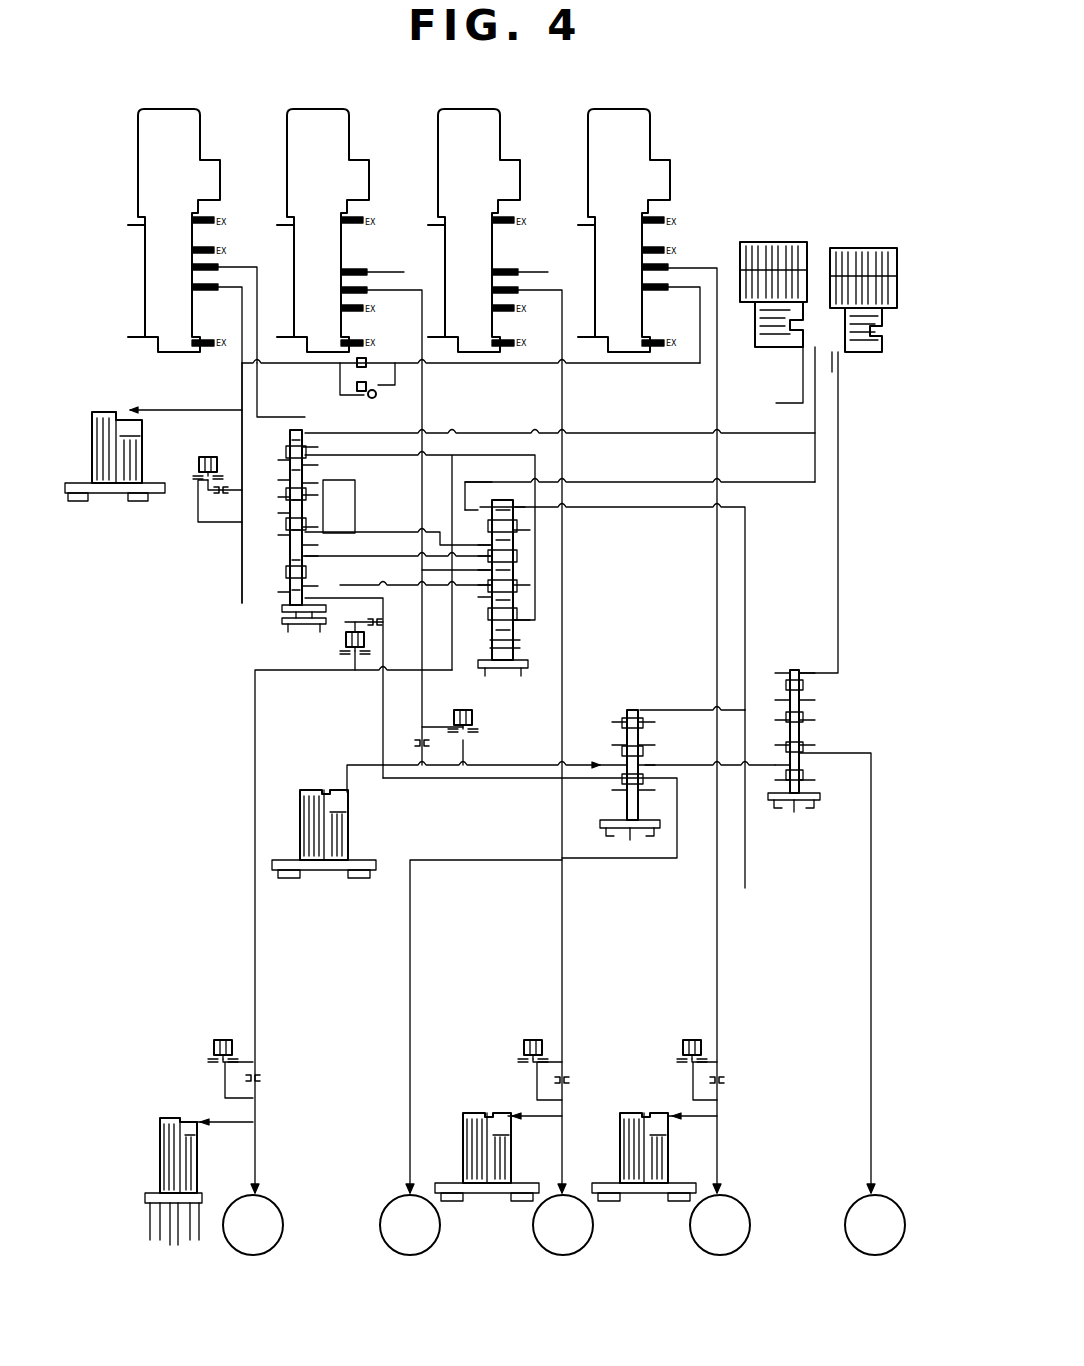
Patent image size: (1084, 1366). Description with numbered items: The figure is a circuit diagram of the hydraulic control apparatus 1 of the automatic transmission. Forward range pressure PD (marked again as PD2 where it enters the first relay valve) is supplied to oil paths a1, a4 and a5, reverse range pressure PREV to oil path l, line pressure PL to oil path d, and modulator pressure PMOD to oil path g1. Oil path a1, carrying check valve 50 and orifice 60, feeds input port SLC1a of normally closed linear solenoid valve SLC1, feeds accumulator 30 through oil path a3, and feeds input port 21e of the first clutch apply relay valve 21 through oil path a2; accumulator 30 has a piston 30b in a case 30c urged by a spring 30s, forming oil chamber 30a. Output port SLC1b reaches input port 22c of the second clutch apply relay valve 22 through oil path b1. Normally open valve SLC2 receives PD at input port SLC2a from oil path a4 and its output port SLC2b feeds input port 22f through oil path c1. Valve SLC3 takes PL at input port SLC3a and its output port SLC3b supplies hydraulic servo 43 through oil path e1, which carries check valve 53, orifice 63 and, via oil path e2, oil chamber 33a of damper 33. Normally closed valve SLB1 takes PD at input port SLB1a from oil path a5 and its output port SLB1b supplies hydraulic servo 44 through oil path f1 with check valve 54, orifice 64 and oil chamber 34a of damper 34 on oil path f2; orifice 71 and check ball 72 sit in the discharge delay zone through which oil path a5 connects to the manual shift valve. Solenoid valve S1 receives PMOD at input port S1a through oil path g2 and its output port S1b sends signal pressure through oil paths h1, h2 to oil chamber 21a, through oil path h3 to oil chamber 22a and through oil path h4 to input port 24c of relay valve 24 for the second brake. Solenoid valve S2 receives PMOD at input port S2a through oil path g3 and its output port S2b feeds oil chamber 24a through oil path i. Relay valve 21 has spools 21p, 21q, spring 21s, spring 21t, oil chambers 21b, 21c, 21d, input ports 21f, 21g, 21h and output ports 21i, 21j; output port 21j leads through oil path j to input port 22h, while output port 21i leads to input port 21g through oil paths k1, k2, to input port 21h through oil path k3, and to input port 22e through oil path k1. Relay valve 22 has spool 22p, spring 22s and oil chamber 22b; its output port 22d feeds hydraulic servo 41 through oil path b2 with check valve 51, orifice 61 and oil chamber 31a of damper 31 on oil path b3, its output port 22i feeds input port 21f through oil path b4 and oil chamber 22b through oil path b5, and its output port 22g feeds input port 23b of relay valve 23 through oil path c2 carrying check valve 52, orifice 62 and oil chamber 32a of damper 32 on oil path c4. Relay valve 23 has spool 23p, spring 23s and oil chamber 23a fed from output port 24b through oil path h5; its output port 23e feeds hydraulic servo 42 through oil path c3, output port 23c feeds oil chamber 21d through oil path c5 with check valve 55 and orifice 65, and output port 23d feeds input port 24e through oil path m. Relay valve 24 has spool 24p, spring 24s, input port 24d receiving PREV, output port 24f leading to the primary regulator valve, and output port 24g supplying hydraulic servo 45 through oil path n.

The hydraulic control apparatus 1 is at (749, 128).
The first clutch apply relay valve 21 is at (288, 432).
The oil chamber 21a is at (348, 420).
The oil chamber 21b is at (318, 467).
The oil chamber 21c is at (283, 497).
The oil chamber 21d is at (320, 587).
The input port 21e is at (283, 535).
The input port 21f is at (318, 450).
The input port 21g is at (320, 484).
The input port 21h is at (343, 495).
The output port 21i is at (318, 546).
The output port 21j is at (320, 557).
The spool 21p is at (283, 513).
The spool 21q is at (283, 460).
The spring 21s is at (283, 592).
The spring 21t is at (283, 480).
The second clutch apply relay valve 22 is at (526, 662).
The oil chamber 22a is at (487, 492).
The oil chamber 22b is at (536, 620).
The input port 22c is at (465, 546).
The output port 22d is at (465, 558).
The input port 22e is at (465, 572).
The input port 22f is at (464, 586).
The output port 22g is at (465, 598).
The input port 22h is at (490, 606).
The output port 22i is at (530, 532).
The spool 22p is at (520, 586).
The spring 22s is at (492, 640).
The C-2 relay valve 23 is at (631, 708).
The oil chamber 23a is at (640, 712).
The input port 23b is at (606, 765).
The output port 23c is at (618, 790).
The output port 23d is at (652, 746).
The output port 23e is at (648, 780).
The spool 23p is at (652, 722).
The spring 23s is at (622, 818).
The B-2 relay valve 24 is at (792, 668).
The oil chamber 24a is at (802, 670).
The output port 24b is at (788, 674).
The input port 24c is at (740, 770).
The input port 24d is at (788, 748).
The input port 24e is at (788, 778).
The output port 24f is at (812, 722).
The output port 24g is at (812, 747).
The spool 24p is at (812, 702).
The spring 24s is at (812, 784).
The accumulator 30 is at (96, 410).
The oil chamber 30a is at (116, 410).
The piston 30b is at (136, 440).
The case 30c is at (94, 432).
The spring 30s is at (130, 462).
The C-1 damper 31 is at (166, 1115).
The oil chamber 31a is at (160, 1132).
The C2-B2 damper 32 is at (308, 788).
The oil chamber 32a is at (334, 790).
The C-3 damper 33 is at (467, 1111).
The oil chamber 33a is at (494, 1113).
The B-1 damper 34 is at (623, 1111).
The oil chamber 34a is at (650, 1113).
The hydraulic servo of clutch C-1 41 is at (268, 1194).
The hydraulic servo of clutch C-2 42 is at (397, 1194).
The hydraulic servo of clutch C-3 43 is at (574, 1194).
The hydraulic servo of brake B-1 44 is at (730, 1194).
The hydraulic servo of brake B-2 45 is at (859, 1194).
The check valve 50 is at (209, 457).
The check valve 51 is at (223, 1040).
The check valve 52 is at (478, 725).
The check valve 53 is at (531, 1040).
The check valve 54 is at (691, 1040).
The check valve 55 is at (354, 658).
The orifice 60 is at (228, 493).
The orifice 61 is at (265, 1078).
The orifice 62 is at (419, 738).
The orifice 63 is at (574, 1078).
The orifice 64 is at (731, 1079).
The orifice 65 is at (386, 622).
The orifice 71 is at (377, 362).
The check ball 72 is at (348, 394).
The linear solenoid valve SLC1 is at (177, 211).
The linear solenoid valve SLC2 is at (326, 211).
The linear solenoid valve SLC3 is at (477, 211).
The linear solenoid valve SLB1 is at (627, 211).
The input port SLC1a is at (216, 290).
The output port SLC1b is at (212, 271).
The input port SLC2a is at (360, 273).
The output port SLC2b is at (362, 294).
The input port SLC3a is at (512, 273).
The output port SLC3b is at (512, 293).
The input port SLB1a is at (664, 291).
The output port SLB1b is at (672, 272).
The solenoid valve S1 is at (788, 242).
The solenoid valve S2 is at (846, 246).
The input port S1a is at (772, 345).
The output port S1b is at (776, 316).
The input port S2a is at (850, 348).
The output port S2b is at (846, 326).
The oil path a1 is at (241, 577).
The oil path a2 is at (260, 545).
The oil path a3 is at (193, 409).
The oil path a4 is at (366, 276).
The oil path a5 is at (698, 350).
The oil path b1 is at (262, 396).
The oil path b2 is at (258, 721).
The oil path b3 is at (228, 1124).
The oil path b4 is at (470, 458).
The oil path b5 is at (538, 572).
The oil path c1 is at (430, 396).
The oil path c2 is at (426, 702).
The oil path c3 is at (412, 925).
The oil path c4 is at (350, 764).
The oil path c5 is at (447, 780).
The oil path d is at (514, 274).
The oil path e1 is at (566, 400).
The oil path e2 is at (542, 1117).
The oil path f1 is at (714, 400).
The oil path f2 is at (701, 1117).
The oil path g1 is at (802, 396).
The oil path g2 is at (806, 358).
The oil path g3 is at (834, 355).
The oil path h1 is at (818, 395).
The oil path h2 is at (614, 432).
The oil path h3 is at (616, 481).
The oil path h4 is at (748, 553).
The oil path h5 is at (700, 709).
The oil path i is at (840, 484).
The oil path j is at (386, 568).
The oil path k1 is at (390, 533).
The oil path k2 is at (355, 500).
The oil path k3 is at (322, 528).
The oil path l is at (748, 866).
The oil path m is at (700, 764).
The oil path n is at (872, 866).
The forward range pressure PD is at (410, 276).
The forward range pressure PD2 is at (242, 622).
The line pressure PL is at (558, 276).
The modulator pressure PMOD is at (759, 404).
The reverse range pressure PREV is at (753, 894).